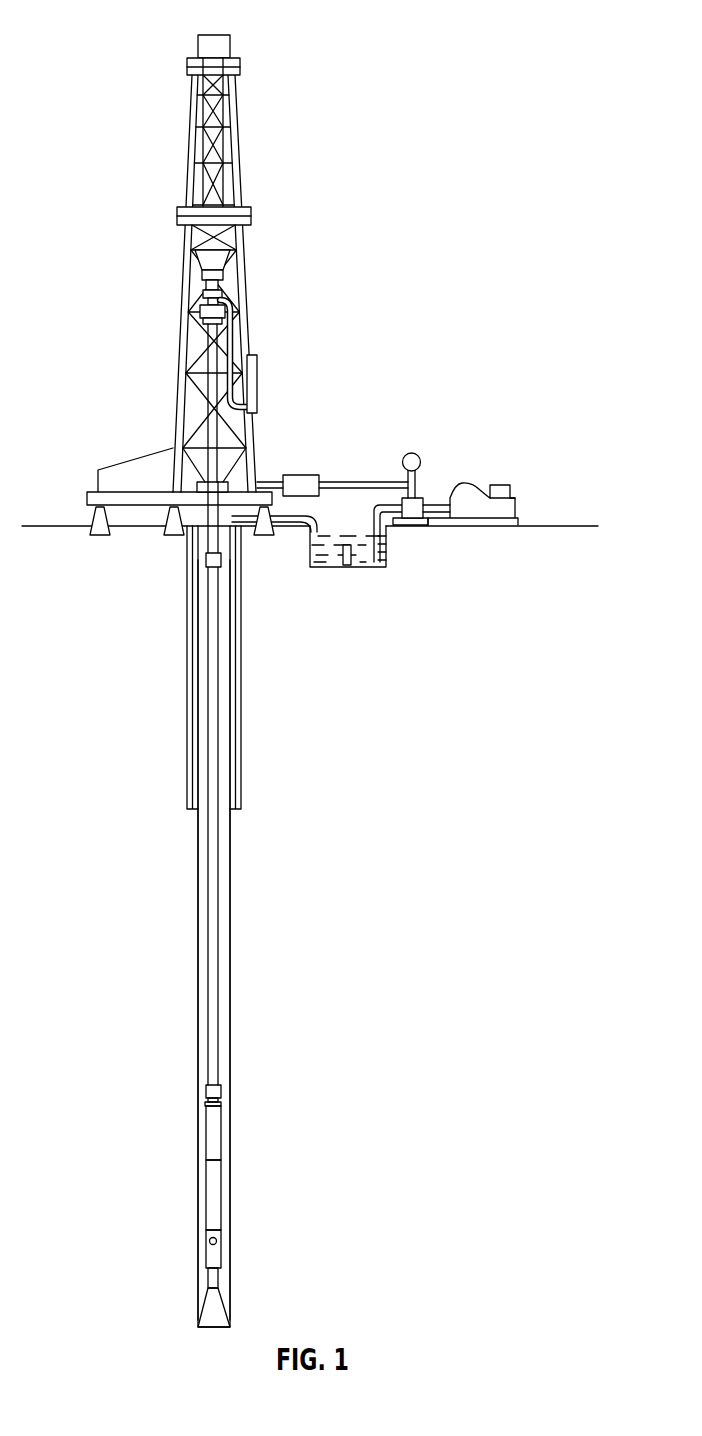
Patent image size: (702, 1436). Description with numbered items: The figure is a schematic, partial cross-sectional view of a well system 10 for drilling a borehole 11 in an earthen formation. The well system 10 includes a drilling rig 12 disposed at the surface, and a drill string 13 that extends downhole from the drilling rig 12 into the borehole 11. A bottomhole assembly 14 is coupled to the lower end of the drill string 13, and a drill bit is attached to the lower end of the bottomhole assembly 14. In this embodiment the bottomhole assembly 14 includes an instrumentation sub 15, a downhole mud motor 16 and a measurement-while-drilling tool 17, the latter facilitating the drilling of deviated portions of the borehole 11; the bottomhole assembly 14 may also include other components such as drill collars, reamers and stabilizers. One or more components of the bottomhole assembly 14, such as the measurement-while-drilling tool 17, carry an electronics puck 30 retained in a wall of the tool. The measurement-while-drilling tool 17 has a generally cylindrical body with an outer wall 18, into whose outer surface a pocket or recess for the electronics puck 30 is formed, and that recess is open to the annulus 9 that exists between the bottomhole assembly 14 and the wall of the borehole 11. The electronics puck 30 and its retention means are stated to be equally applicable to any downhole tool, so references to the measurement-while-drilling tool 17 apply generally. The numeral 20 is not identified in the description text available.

The well system 10 is at (108, 24).
The drilling rig 12 is at (247, 282).
The drill string 13 is at (217, 852).
The annulus 9 is at (223, 907).
The outer wall 18 is at (231, 982).
The borehole 11 is at (230, 1113).
The bottomhole assembly 14 is at (190, 1090).
The instrumentation sub 15 is at (215, 1132).
The downhole mud motor 16 is at (215, 1200).
The electronics puck 30 is at (218, 1242).
The measurement-while-drilling tool 17 is at (215, 1263).
The drill bit 20 is at (207, 1308).